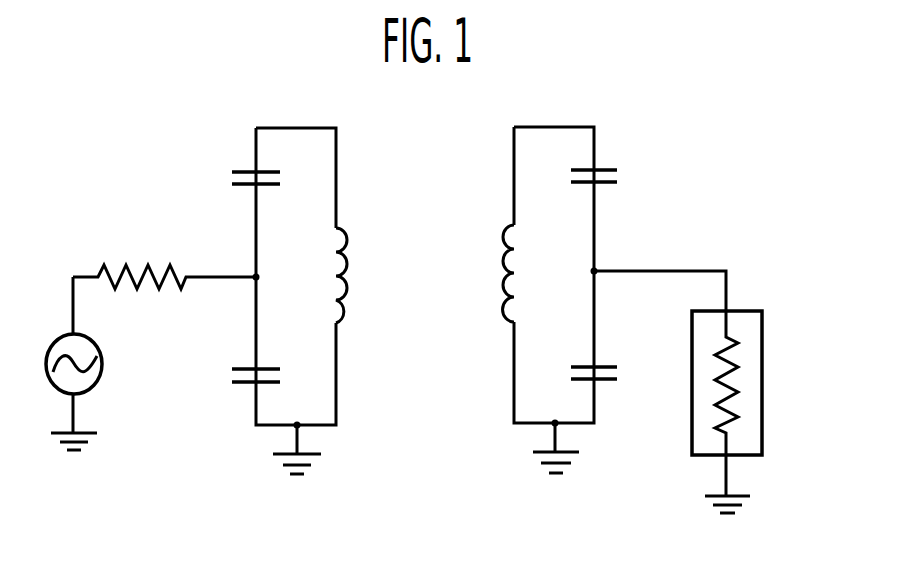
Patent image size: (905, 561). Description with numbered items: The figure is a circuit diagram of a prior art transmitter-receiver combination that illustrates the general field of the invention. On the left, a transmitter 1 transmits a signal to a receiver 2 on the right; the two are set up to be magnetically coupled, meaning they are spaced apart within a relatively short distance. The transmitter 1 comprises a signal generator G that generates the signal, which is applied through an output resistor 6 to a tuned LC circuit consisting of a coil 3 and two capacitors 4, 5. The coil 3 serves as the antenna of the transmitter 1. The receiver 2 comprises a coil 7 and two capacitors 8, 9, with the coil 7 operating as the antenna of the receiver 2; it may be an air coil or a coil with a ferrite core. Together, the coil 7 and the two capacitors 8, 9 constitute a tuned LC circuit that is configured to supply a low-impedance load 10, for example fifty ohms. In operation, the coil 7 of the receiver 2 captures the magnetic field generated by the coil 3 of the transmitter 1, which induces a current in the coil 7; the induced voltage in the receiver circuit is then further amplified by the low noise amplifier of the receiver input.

The transmitter 1 is at (98, 148).
The receiver 2 is at (737, 142).
The coil 3 is at (348, 265).
The capacitor 4 is at (240, 172).
The capacitor 5 is at (239, 384).
The output resistor 6 is at (150, 264).
The coil 7 is at (503, 262).
The capacitor 8 is at (618, 168).
The capacitor 9 is at (618, 381).
The low-impedance load 10 is at (762, 381).
The signal generator G is at (103, 368).